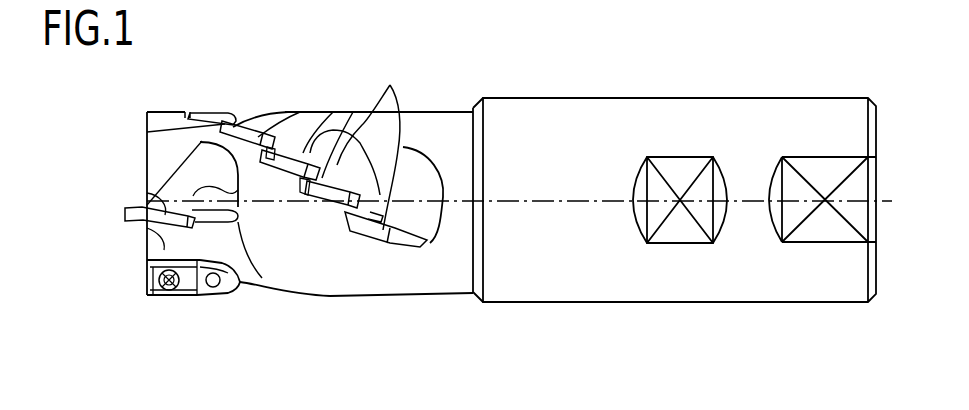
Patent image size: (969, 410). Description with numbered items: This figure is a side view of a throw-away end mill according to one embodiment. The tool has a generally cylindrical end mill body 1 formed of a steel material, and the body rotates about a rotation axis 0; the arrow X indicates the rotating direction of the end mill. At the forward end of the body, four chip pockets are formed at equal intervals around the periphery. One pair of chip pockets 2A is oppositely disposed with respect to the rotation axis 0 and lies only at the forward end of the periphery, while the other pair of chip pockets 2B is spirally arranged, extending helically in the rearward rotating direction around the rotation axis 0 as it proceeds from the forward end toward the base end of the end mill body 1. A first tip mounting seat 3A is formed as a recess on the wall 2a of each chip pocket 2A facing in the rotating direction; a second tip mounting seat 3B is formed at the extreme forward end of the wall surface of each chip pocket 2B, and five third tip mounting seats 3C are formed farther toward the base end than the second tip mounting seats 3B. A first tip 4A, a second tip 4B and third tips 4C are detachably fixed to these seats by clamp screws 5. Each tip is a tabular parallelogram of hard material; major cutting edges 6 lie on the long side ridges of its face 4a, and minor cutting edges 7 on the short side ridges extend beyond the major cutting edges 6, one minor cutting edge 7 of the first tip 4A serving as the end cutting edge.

The end mill body 1 is at (594, 78).
The rotation axis 0 is at (610, 201).
The chip pocket 2A is at (164, 159).
The chip pocket 2B is at (273, 98).
The wall of chip pocket 2a is at (212, 227).
The first tip mounting seat 3A is at (228, 238).
The second tip mounting seat 3B is at (165, 256).
The third tip mounting seat 3C is at (372, 245).
The first tip 4A is at (157, 215).
The second tip 4B is at (167, 300).
The third tip 4C is at (390, 85).
The face of tip 4a is at (290, 183).
The clamp screw 5 is at (180, 300).
The major cutting edge 6 is at (147, 195).
The minor cutting edge 7 is at (147, 200).
The rotation direction X is at (185, 177).